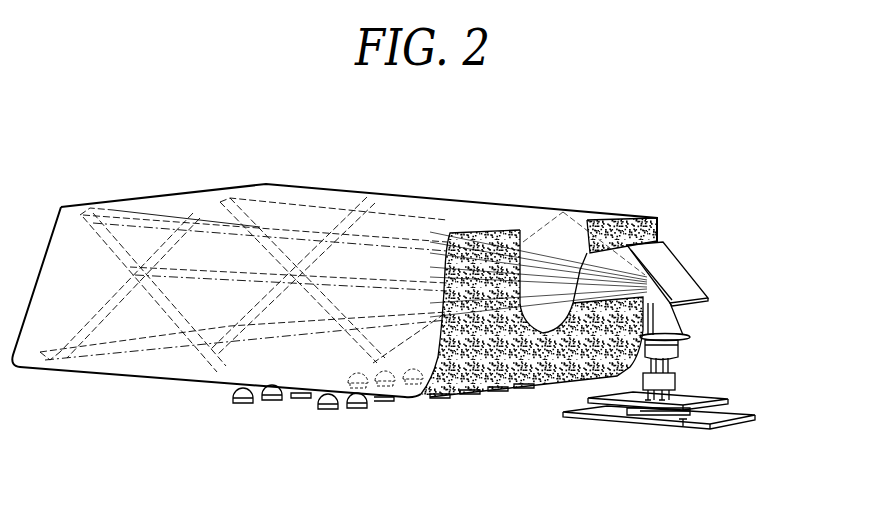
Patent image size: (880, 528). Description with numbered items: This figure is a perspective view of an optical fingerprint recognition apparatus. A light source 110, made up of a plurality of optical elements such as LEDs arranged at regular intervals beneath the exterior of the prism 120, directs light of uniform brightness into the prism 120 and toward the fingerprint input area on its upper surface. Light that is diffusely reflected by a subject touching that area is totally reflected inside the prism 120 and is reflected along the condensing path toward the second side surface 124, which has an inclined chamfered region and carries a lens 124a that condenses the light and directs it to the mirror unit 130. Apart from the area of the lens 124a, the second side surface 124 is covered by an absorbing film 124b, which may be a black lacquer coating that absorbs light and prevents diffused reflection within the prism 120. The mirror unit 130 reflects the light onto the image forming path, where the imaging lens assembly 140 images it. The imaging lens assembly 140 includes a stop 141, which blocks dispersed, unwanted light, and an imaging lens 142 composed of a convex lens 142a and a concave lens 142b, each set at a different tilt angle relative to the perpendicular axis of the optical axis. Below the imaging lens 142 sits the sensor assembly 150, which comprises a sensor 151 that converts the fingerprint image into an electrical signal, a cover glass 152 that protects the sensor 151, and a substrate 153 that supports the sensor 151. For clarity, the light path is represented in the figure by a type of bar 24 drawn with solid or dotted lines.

The bar 24 is at (560, 250).
The light source 110 is at (301, 405).
The prism 120 is at (165, 197).
The second side surface 124 is at (539, 356).
The lens 124a is at (550, 326).
The absorbing film 124b is at (482, 335).
The mirror unit 130 is at (670, 260).
The imaging lens assembly 140 is at (740, 352).
The stop 141 is at (686, 335).
The imaging lens 142 is at (723, 364).
The convex lens 142a is at (672, 348).
The concave lens 142b is at (672, 380).
The sensor assembly 150 is at (659, 451).
The sensor 151 is at (640, 411).
The cover glass 152 is at (665, 413).
The substrate 153 is at (575, 467).